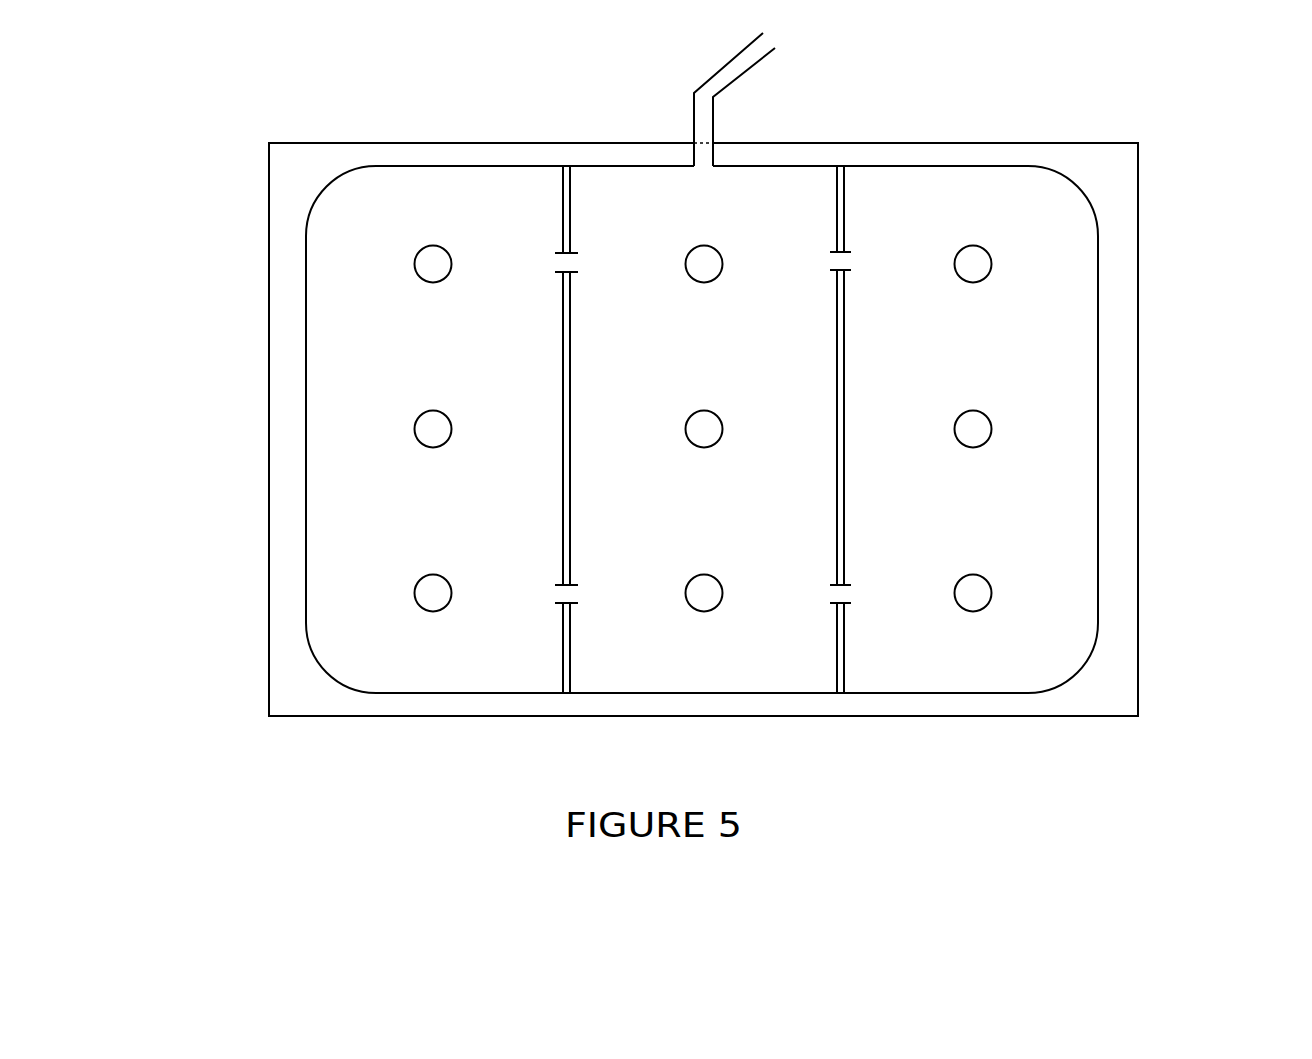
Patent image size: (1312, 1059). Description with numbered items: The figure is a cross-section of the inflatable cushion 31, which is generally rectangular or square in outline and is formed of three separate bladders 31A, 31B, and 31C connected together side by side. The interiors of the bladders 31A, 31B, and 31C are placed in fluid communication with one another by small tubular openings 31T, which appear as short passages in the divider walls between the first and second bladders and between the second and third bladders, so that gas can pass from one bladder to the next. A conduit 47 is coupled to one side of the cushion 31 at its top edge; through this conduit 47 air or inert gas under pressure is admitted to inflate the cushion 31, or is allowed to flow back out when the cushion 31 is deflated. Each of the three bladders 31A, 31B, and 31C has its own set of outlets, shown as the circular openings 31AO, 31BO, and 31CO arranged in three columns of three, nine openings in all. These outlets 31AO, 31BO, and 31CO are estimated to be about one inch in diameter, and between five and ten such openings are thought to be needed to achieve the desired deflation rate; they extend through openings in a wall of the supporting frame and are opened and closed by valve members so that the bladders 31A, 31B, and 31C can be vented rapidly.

The inflatable cushion 31 is at (1087, 192).
The first bladder 31A is at (429, 187).
The second bladder 31B is at (633, 180).
The third bladder 31C is at (975, 183).
The outlets of first bladder 31AO is at (417, 585).
The outlets of second bladder 31BO is at (720, 605).
The outlets of third bladder 31CO is at (991, 598).
The tubular openings 31T is at (556, 592).
The conduit 47 is at (702, 85).